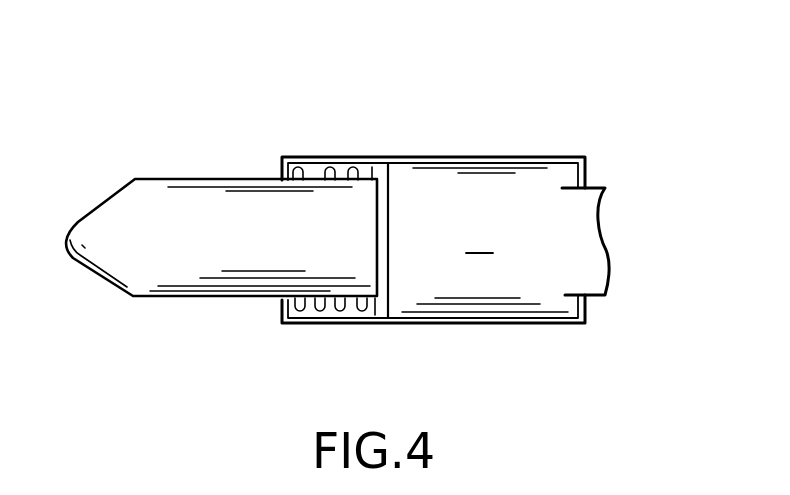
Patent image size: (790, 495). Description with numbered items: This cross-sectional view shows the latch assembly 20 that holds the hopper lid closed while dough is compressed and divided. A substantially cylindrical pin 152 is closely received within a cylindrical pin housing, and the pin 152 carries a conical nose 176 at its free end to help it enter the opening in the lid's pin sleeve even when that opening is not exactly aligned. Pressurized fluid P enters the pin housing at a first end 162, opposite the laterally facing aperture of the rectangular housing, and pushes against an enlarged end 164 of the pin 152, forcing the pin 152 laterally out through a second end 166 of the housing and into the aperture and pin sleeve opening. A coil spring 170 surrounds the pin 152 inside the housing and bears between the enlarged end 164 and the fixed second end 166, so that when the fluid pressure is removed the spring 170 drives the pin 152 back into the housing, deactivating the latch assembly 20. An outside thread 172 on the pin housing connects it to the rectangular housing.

The latch assembly 20 is at (193, 110).
The pin 152 is at (250, 210).
The first end 162 is at (587, 173).
The enlarged end 164 is at (383, 302).
The second end 166 is at (283, 312).
The coil spring 170 is at (350, 170).
The outside thread 172 is at (460, 155).
The conical nose 176 is at (92, 247).